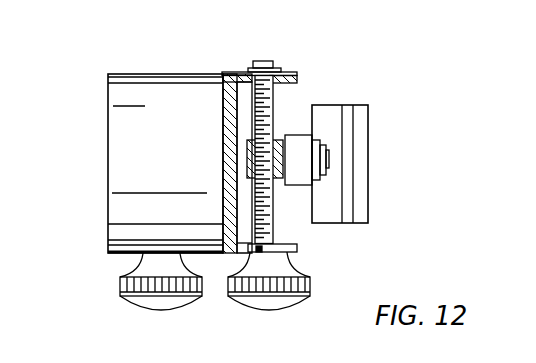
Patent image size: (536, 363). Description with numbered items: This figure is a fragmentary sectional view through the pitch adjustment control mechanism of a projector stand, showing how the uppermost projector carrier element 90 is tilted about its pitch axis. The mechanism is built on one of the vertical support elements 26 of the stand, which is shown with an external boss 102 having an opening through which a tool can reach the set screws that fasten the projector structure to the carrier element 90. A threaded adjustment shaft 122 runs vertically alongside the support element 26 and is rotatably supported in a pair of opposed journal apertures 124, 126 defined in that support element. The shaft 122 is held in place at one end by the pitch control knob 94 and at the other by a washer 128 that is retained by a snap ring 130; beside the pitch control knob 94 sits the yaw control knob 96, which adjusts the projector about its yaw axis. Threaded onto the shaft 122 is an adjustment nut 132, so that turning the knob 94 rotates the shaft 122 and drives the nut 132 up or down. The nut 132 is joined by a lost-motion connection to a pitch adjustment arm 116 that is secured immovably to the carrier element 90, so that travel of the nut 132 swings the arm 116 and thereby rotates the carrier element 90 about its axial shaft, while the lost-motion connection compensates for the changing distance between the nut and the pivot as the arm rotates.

The vertical support element 26 is at (224, 90).
The projector carrier element 90 is at (368, 127).
The pitch control knob 94 is at (302, 296).
The yaw control knob 96 is at (141, 294).
The external boss 102 is at (113, 142).
The pitch adjustment arm 116 is at (300, 179).
The threaded adjustment shaft 122 is at (275, 101).
The journal aperture 124 is at (292, 251).
The journal aperture 126 is at (297, 82).
The washer 128 is at (252, 73).
The snap ring 130 is at (276, 62).
The adjustment nut 132 is at (247, 162).